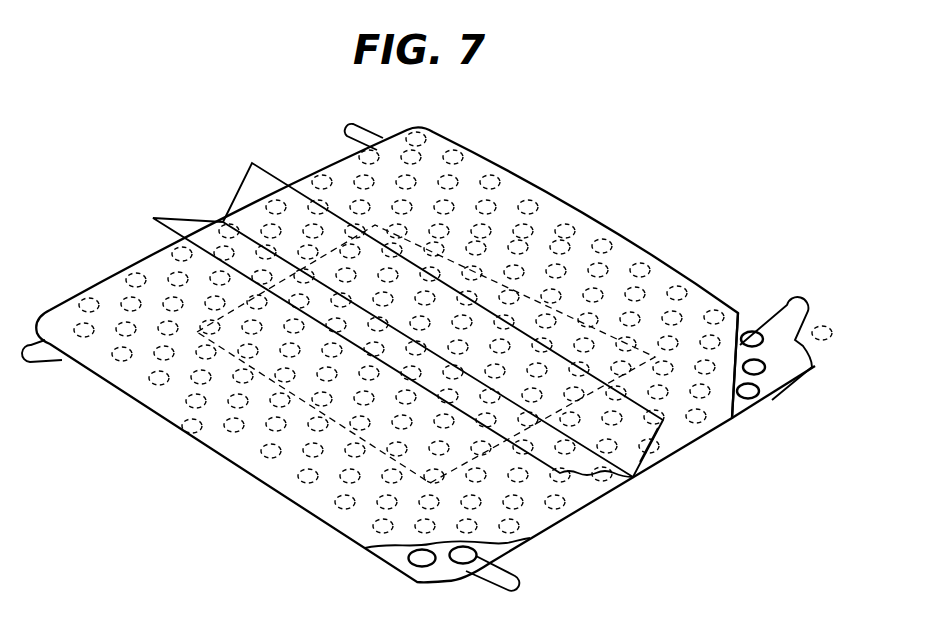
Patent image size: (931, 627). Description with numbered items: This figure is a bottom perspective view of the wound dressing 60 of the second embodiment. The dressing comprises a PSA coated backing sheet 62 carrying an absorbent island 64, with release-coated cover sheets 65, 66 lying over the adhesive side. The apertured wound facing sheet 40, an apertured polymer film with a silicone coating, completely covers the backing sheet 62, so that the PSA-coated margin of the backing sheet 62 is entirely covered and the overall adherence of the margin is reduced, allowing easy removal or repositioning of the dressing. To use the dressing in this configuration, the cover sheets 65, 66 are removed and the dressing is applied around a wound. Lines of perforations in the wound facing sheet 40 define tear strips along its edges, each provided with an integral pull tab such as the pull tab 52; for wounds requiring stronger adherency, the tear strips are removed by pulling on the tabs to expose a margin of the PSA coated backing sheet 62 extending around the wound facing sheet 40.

The wound dressing 60 is at (606, 161).
The release-coated cover sheet 65 is at (233, 198).
The release-coated cover sheet 66 is at (188, 216).
The absorbent island 64 is at (583, 311).
The pull tab 52 is at (797, 305).
The PSA coated backing sheet 62 is at (795, 393).
The apertured wound facing sheet 40 is at (417, 582).